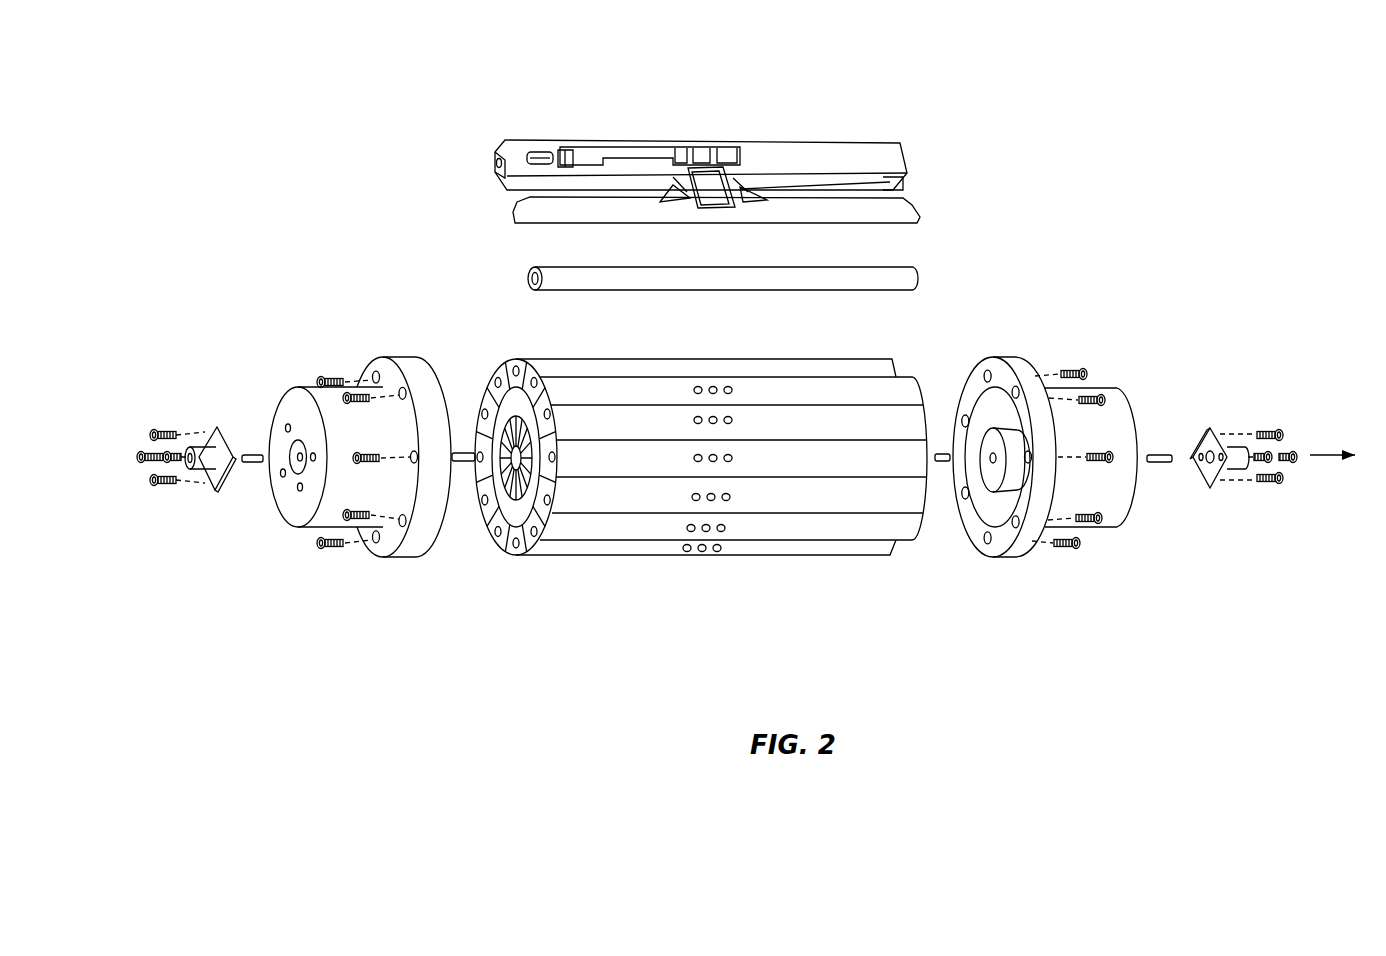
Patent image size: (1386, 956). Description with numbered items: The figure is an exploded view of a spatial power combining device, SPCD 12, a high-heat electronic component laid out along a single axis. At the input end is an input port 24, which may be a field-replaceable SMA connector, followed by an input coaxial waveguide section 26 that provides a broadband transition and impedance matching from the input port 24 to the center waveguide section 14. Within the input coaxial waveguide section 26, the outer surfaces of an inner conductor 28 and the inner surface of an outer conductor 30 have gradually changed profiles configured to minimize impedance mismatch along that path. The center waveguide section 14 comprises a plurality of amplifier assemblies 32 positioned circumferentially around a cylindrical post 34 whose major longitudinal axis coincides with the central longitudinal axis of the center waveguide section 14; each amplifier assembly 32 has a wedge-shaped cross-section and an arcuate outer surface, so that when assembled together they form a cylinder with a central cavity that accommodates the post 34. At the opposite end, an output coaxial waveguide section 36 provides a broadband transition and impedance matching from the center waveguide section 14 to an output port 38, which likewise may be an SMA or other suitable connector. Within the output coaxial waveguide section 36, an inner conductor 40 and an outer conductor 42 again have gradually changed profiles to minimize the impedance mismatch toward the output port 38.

The spatial power combining device 12 is at (398, 245).
The center waveguide section 14 is at (703, 573).
The input port 24 is at (213, 476).
The input coaxial waveguide section 26 is at (327, 573).
The inner conductor 28 is at (296, 473).
The outer conductor 30 is at (320, 377).
The amplifier assemblies 32 is at (848, 130).
The cylindrical post 34 is at (906, 281).
The output coaxial waveguide section 36 is at (1084, 574).
The output port 38 is at (1236, 466).
The inner conductor 40 is at (253, 463).
The outer conductor 42 is at (1117, 400).